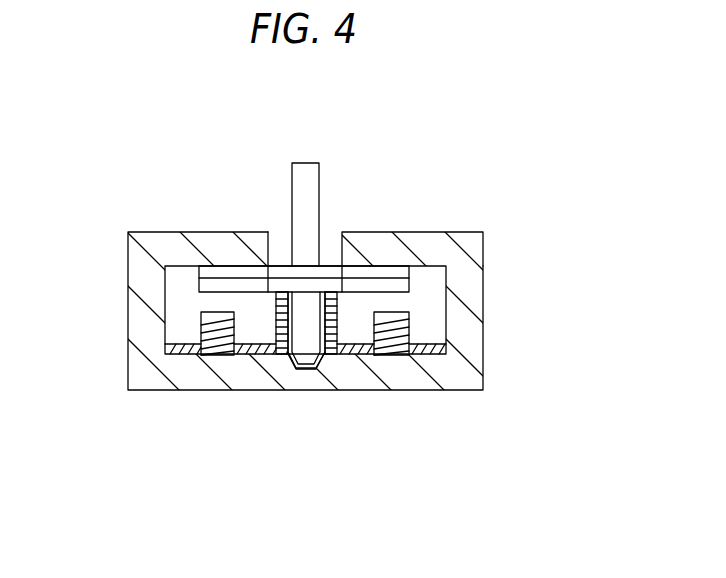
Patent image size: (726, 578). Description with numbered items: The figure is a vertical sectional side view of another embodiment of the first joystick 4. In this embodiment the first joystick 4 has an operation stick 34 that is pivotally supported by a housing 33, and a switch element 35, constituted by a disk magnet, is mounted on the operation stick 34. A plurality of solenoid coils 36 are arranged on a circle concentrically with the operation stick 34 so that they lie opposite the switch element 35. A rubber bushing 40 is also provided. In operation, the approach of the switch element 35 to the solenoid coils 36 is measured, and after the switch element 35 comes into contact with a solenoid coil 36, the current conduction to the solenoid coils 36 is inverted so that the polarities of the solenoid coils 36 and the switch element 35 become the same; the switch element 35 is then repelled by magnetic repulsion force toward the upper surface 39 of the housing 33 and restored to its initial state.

The first joystick 4 is at (467, 404).
The housing 33 is at (140, 372).
The operation stick 34 is at (313, 177).
The switch element 35 is at (202, 271).
The solenoid coils 36 is at (408, 327).
The upper surface 39 is at (424, 238).
The rubber bushing 40 is at (334, 313).